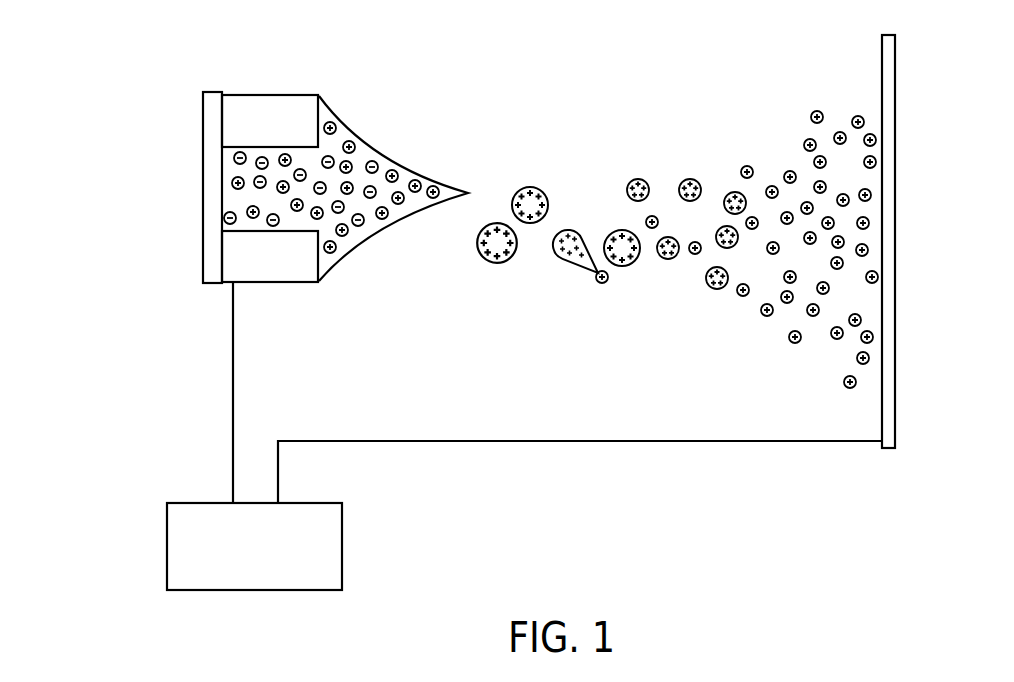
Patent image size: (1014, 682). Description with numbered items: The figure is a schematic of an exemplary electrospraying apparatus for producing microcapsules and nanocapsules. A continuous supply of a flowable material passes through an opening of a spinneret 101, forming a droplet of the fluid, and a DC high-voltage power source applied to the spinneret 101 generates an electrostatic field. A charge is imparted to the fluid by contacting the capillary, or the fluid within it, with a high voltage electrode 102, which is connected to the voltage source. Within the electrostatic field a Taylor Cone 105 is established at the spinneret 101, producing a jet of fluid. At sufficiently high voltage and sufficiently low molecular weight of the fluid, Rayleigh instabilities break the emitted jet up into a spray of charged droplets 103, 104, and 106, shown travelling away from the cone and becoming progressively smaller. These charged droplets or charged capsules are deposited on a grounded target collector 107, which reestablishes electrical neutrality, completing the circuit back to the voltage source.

The spinneret 101 is at (269, 106).
The high voltage electrode 102 is at (220, 306).
The charged droplet 103 is at (539, 171).
The charged droplet 104 is at (566, 286).
The Taylor Cone 105 is at (392, 141).
The charged droplets 106 is at (702, 135).
The grounded target collector 107 is at (898, 87).